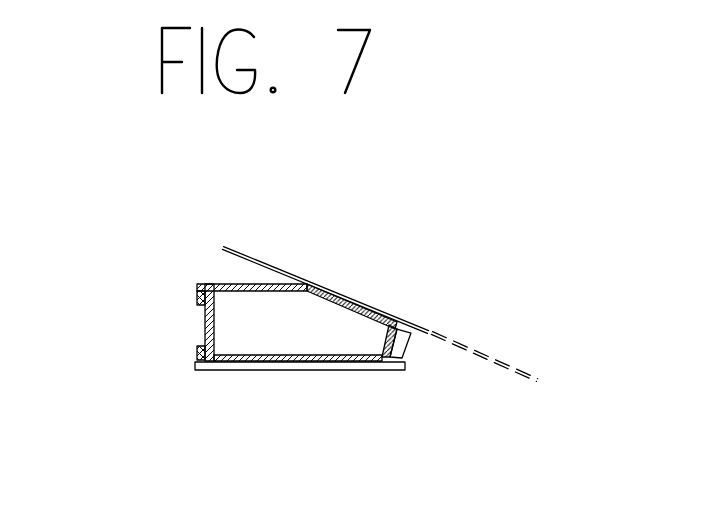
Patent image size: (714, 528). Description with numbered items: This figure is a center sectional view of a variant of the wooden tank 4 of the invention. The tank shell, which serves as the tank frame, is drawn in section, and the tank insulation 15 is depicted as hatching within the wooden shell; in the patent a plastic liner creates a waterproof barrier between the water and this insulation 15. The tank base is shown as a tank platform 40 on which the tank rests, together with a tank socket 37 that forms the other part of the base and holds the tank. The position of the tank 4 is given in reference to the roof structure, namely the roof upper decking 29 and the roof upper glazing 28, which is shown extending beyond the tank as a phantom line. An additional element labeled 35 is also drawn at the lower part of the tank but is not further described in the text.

The wooden tank 4 is at (290, 352).
The tank insulation 15 is at (267, 287).
The roof upper glazing 28 is at (552, 473).
The roof upper decking 29 is at (397, 315).
The support 35 is at (383, 339).
The tank socket 37 is at (105, 328).
The tank platform 40 is at (188, 370).